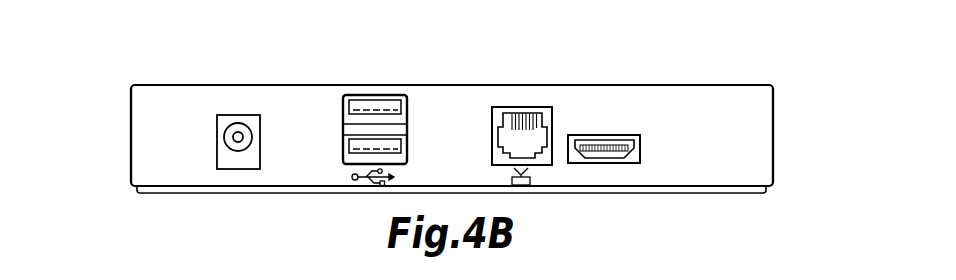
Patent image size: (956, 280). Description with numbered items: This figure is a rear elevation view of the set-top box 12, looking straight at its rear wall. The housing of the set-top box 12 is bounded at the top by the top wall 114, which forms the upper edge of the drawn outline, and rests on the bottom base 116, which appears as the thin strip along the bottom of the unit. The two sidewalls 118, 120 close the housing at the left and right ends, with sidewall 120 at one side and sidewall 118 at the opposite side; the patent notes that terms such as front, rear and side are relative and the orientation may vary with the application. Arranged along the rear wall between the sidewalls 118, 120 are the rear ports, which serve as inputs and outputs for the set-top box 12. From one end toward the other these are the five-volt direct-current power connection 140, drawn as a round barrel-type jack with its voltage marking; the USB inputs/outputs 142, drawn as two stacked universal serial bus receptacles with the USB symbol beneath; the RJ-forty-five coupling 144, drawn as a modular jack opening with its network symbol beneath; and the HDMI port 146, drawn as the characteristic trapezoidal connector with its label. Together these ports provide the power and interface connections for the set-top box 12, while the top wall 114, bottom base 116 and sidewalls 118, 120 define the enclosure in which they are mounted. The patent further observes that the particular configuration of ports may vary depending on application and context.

The set-top box 12 is at (180, 78).
The top wall 114 is at (687, 87).
The bottom base 116 is at (686, 194).
The sidewall 118 is at (773, 137).
The sidewall 120 is at (131, 141).
The 5V dc power connection 140 is at (238, 162).
The USB inputs/outputs 142 is at (375, 95).
The RJ-45 coupling 144 is at (526, 112).
The HDMI port 146 is at (603, 137).